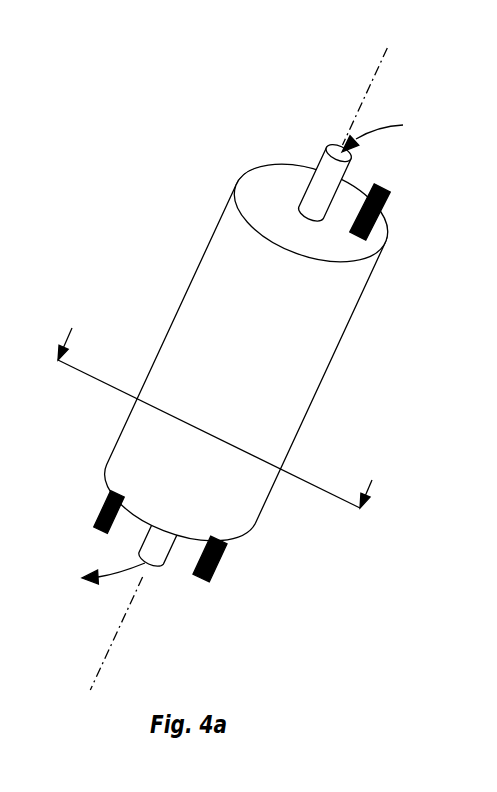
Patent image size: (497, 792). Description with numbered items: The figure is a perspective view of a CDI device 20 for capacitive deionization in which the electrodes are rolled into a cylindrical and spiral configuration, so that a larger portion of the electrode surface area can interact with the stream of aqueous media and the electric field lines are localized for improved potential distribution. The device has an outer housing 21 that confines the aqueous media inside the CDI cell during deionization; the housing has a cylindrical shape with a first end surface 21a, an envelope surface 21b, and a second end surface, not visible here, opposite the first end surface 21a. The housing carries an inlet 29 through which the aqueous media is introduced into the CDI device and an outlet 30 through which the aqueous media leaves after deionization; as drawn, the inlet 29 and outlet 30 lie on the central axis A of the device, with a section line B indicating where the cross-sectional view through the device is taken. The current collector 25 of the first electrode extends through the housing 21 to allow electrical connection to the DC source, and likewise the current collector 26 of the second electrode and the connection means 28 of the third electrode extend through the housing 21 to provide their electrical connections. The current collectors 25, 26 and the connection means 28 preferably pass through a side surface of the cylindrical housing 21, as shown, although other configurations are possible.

The CDI device 20 is at (263, 367).
The outer housing 21 is at (253, 343).
The first end surface 21a is at (292, 203).
The envelope surface 21b is at (287, 354).
The current collector 25 is at (100, 503).
The current collector 26 is at (222, 562).
The connection means 28 is at (388, 205).
The inlet 29 is at (325, 178).
The outlet 30 is at (148, 548).
The longitudinal axis A is at (372, 85).
The section line B- B is at (222, 403).